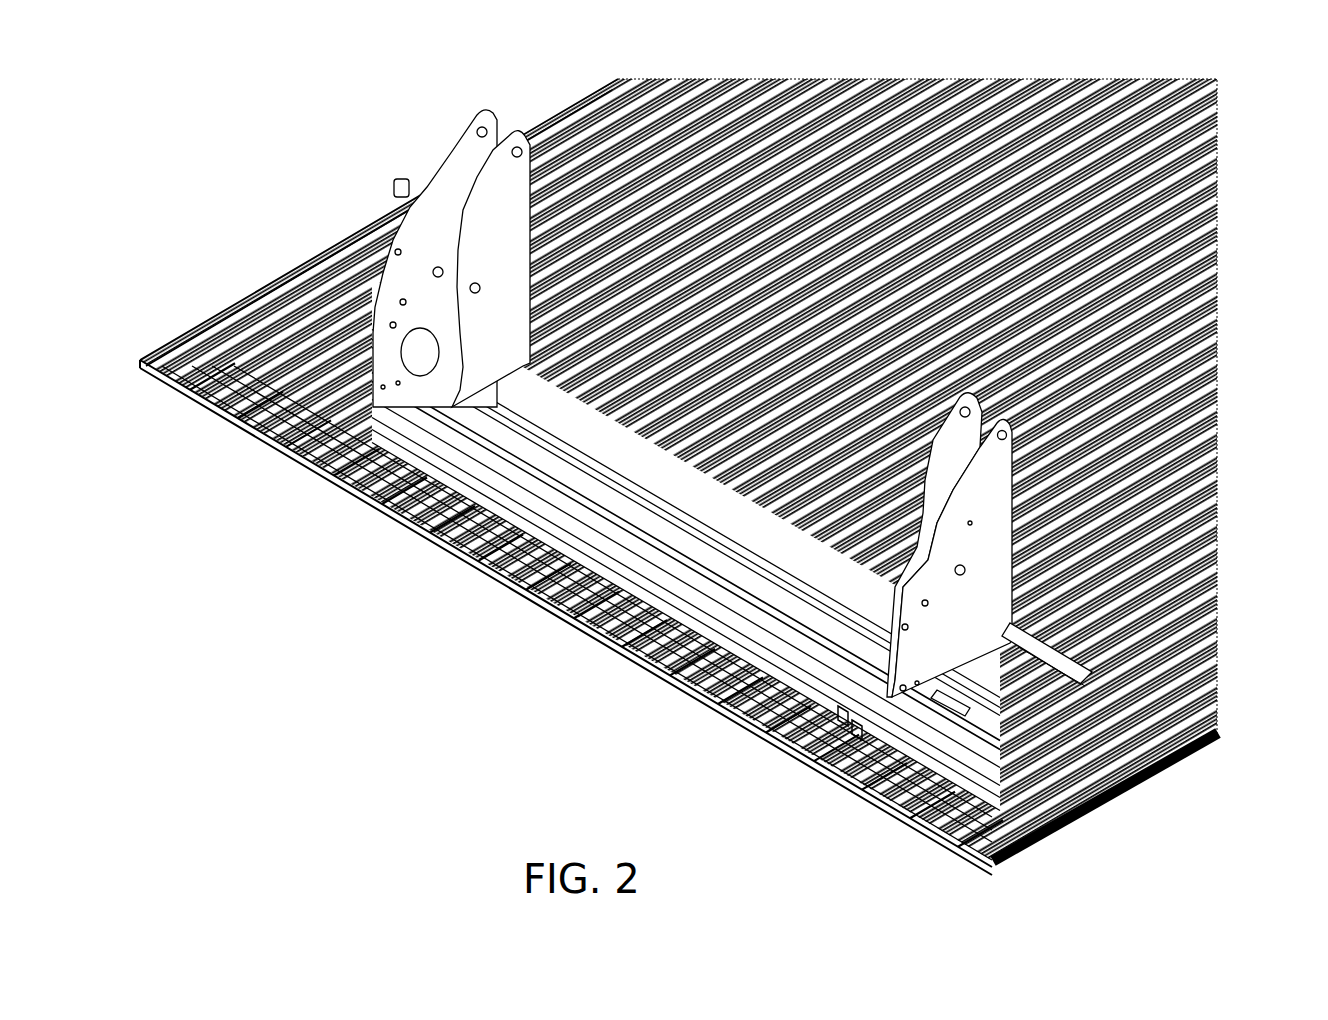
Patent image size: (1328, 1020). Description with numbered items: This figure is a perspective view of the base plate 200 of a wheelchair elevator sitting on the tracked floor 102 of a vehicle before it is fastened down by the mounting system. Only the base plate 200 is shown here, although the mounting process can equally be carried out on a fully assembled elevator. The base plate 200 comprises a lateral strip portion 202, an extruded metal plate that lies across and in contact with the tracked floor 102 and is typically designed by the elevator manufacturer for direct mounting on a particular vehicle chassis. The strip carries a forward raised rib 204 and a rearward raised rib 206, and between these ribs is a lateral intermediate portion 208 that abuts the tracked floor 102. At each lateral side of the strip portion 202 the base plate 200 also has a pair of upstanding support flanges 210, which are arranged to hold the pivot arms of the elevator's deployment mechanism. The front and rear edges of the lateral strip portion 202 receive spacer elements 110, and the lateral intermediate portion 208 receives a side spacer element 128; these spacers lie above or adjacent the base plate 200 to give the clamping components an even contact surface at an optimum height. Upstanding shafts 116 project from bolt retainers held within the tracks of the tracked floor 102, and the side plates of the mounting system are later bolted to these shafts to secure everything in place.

The tracked floor 102 is at (205, 412).
The spacer elements 110 is at (1078, 673).
The upstanding shafts 116 is at (835, 728).
The side spacer element 128 is at (960, 690).
The base plate 200 is at (437, 222).
The lateral strip portion 202 is at (570, 537).
The forward raised rib 204 is at (663, 562).
The rearward raised rib 206 is at (777, 540).
The lateral intermediate portion 208 is at (548, 462).
The upstanding support flanges 210 is at (447, 112).